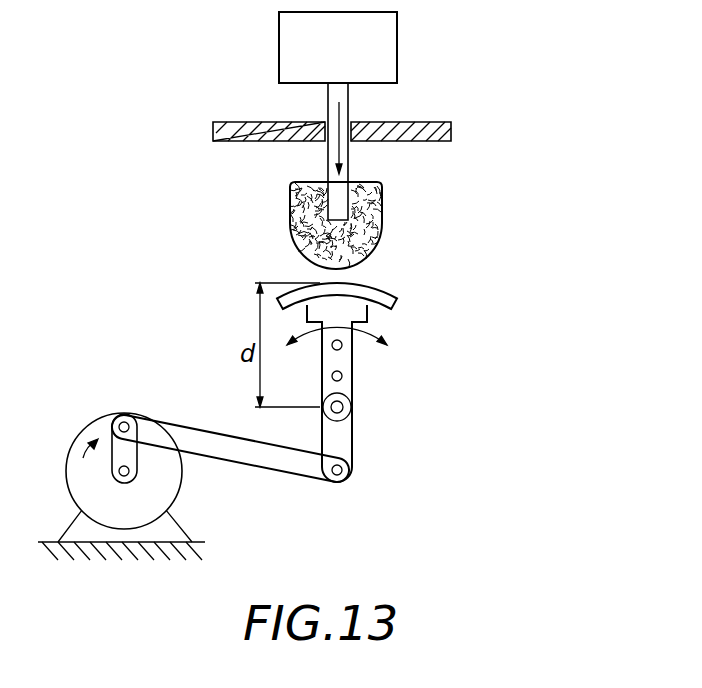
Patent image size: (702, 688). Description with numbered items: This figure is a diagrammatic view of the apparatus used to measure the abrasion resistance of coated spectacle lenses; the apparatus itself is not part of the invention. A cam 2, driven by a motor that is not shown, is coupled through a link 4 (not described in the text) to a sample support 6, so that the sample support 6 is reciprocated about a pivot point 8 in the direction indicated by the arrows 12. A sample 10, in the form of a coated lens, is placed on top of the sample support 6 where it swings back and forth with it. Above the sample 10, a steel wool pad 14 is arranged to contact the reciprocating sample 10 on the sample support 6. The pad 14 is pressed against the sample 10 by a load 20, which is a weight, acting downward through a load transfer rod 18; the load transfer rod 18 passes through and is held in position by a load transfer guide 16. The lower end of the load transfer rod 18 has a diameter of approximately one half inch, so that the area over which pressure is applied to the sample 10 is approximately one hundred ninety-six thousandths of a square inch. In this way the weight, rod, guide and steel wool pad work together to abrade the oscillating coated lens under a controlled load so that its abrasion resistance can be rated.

The cam 2 is at (110, 471).
The connecting rod 4 is at (278, 460).
The sample support 6 is at (353, 446).
The pivot point 8 is at (351, 407).
The sample 10 is at (397, 300).
The arrows 12 is at (390, 335).
The steel wool pad 14 is at (382, 208).
The load transfer guide 16 is at (450, 123).
The load transfer rod 18 is at (348, 103).
The load 20 is at (397, 48).